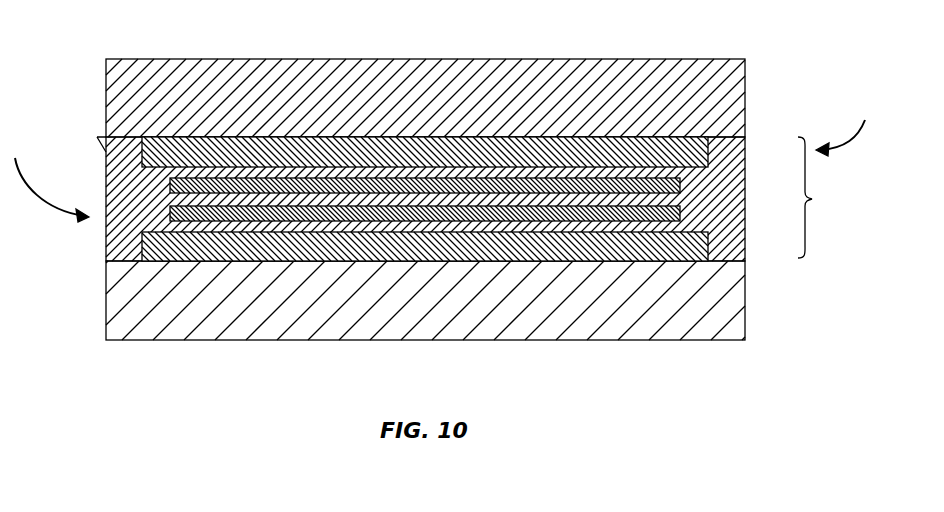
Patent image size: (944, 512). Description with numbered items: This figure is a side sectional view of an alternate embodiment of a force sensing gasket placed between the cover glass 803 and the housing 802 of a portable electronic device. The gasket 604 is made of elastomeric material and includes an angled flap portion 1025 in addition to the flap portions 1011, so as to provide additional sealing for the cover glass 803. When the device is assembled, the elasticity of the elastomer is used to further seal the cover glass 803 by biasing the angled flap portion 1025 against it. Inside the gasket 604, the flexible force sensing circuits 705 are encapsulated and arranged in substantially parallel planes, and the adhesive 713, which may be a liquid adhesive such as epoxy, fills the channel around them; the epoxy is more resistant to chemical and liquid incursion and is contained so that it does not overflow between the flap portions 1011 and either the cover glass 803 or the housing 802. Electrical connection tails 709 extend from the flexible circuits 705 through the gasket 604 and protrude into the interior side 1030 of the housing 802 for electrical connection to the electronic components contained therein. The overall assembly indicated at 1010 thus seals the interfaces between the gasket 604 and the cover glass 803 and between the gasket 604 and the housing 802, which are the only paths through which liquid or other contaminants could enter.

The cover glass 803 is at (557, 59).
The housing 802 is at (545, 341).
The angled flap portion 1025 is at (97, 137).
The flap portions 1011 is at (106, 241).
The electrical connection tails 709 is at (680, 186).
The flexible force sensing circuits 705 is at (241, 183).
The adhesive 713 is at (322, 150).
The gasket 604 is at (823, 197).
The embedded component assembly 1010 is at (48, 203).
The interior side 1030 is at (843, 136).